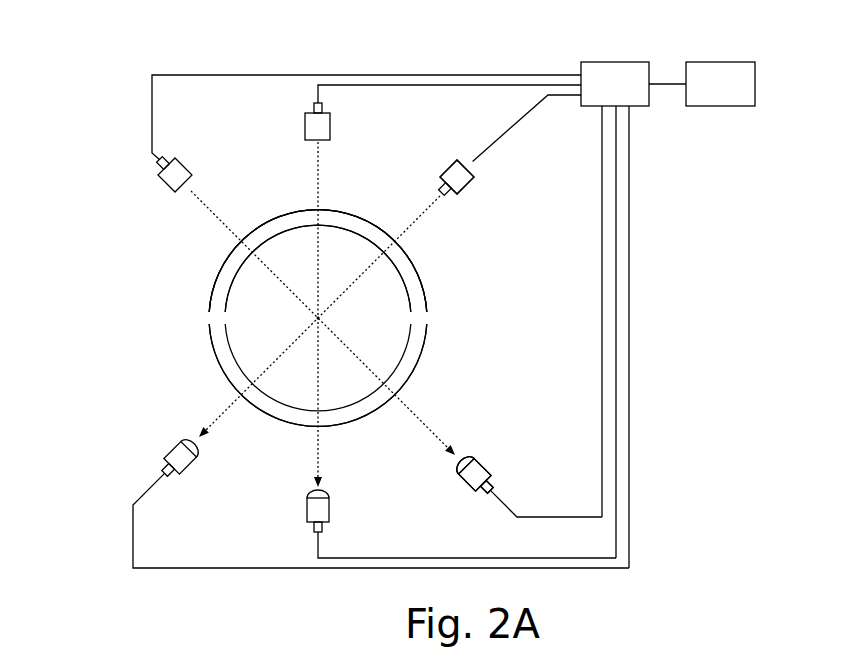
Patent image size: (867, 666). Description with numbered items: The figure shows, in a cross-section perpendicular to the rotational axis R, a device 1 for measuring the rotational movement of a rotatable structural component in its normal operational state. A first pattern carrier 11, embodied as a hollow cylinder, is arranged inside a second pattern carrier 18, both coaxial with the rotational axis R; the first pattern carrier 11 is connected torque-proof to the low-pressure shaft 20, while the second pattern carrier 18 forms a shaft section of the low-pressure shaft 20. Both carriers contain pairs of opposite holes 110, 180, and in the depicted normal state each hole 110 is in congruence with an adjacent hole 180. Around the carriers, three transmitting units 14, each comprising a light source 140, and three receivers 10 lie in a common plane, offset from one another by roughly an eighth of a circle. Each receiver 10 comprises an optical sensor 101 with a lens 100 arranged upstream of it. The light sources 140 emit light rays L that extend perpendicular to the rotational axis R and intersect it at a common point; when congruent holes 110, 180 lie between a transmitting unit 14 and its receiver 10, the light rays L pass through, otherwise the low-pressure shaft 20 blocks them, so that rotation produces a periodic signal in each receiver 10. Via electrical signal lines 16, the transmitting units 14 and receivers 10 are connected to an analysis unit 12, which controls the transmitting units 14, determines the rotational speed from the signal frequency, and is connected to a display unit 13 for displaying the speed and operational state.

The device 1 is at (98, 120).
The receiver 10 is at (348, 497).
The first pattern carrier 11 is at (218, 280).
The analysis unit 12 is at (617, 62).
The display unit 13 is at (718, 62).
The transmitting unit 14 is at (182, 145).
The electrical signal lines 16 is at (632, 245).
The second pattern carrier 18 is at (207, 333).
The low-pressure shaft 20 is at (202, 382).
The lens 100 is at (465, 458).
The optical sensor 101 is at (480, 470).
The holes 110 is at (318, 230).
The light source 140 is at (468, 186).
The holes 180 is at (238, 230).
The light rays L is at (193, 198).
The rotational axis R is at (320, 320).